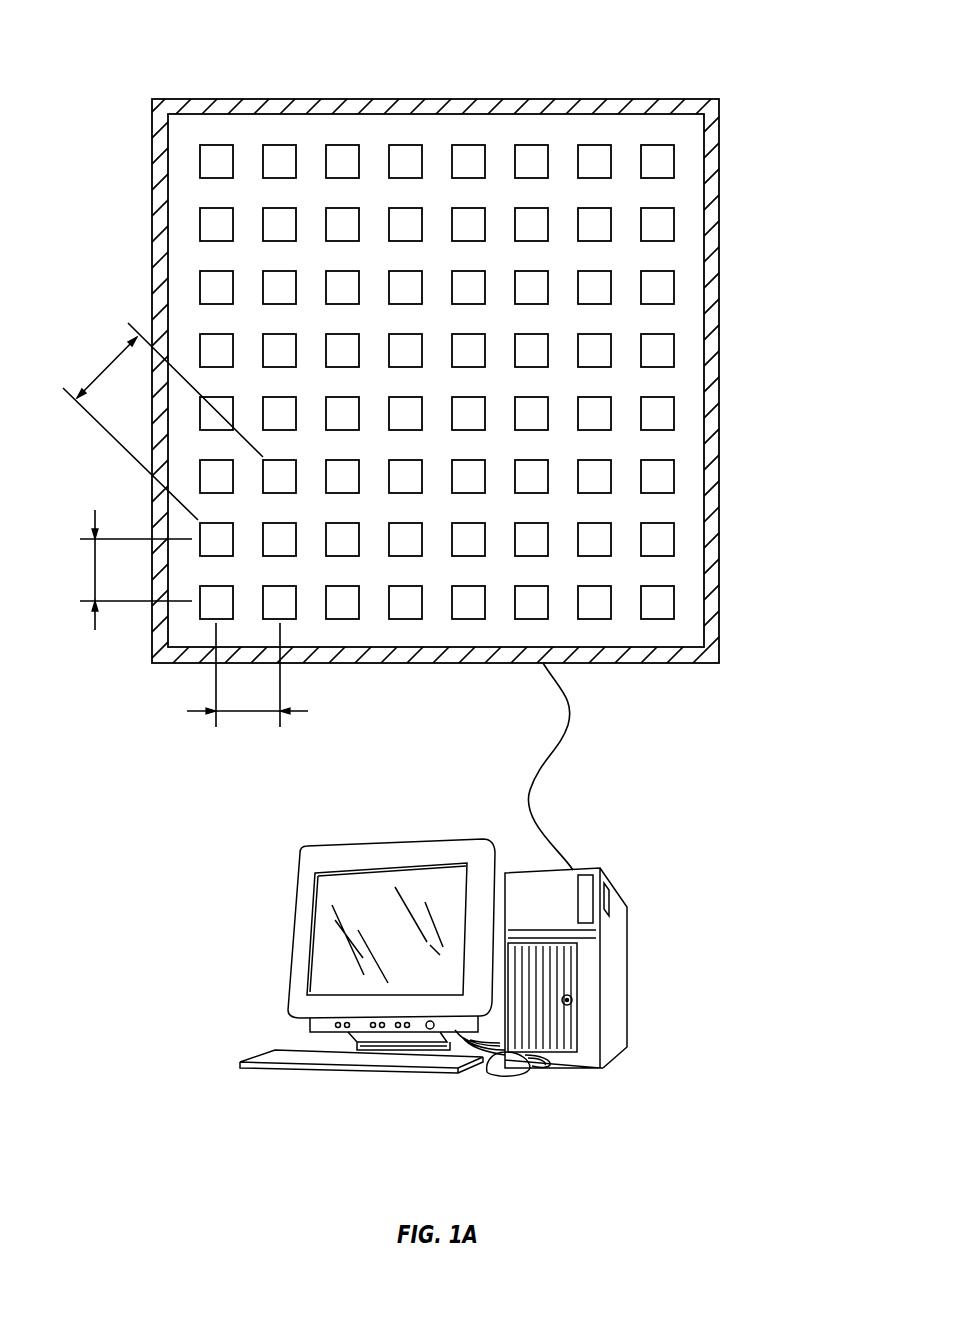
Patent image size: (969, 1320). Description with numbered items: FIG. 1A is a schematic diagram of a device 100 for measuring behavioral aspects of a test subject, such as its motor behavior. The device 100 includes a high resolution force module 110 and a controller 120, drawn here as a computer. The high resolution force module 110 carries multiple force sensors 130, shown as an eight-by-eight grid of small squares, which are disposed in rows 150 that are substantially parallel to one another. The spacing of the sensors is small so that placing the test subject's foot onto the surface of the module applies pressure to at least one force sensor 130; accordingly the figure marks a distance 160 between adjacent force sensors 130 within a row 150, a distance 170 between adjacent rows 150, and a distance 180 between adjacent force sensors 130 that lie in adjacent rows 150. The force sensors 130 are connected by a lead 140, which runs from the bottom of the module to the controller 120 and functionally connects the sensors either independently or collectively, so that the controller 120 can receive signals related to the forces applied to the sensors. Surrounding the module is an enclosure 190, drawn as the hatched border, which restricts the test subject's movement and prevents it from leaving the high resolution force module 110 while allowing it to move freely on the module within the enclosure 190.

The device for measuring behavioral aspects 100 is at (129, 45).
The high resolution force module 110 is at (714, 177).
The enclosure 190 is at (708, 307).
The force sensor 130 is at (662, 602).
The row 150 is at (690, 599).
The distance between adjacent force sensors within a row 160 is at (248, 712).
The distance between adjacent rows 170 is at (93, 570).
The distance between adjacent force sensors in adjacent rows 180 is at (122, 348).
The lead 140 is at (555, 757).
The controller 120 is at (704, 885).